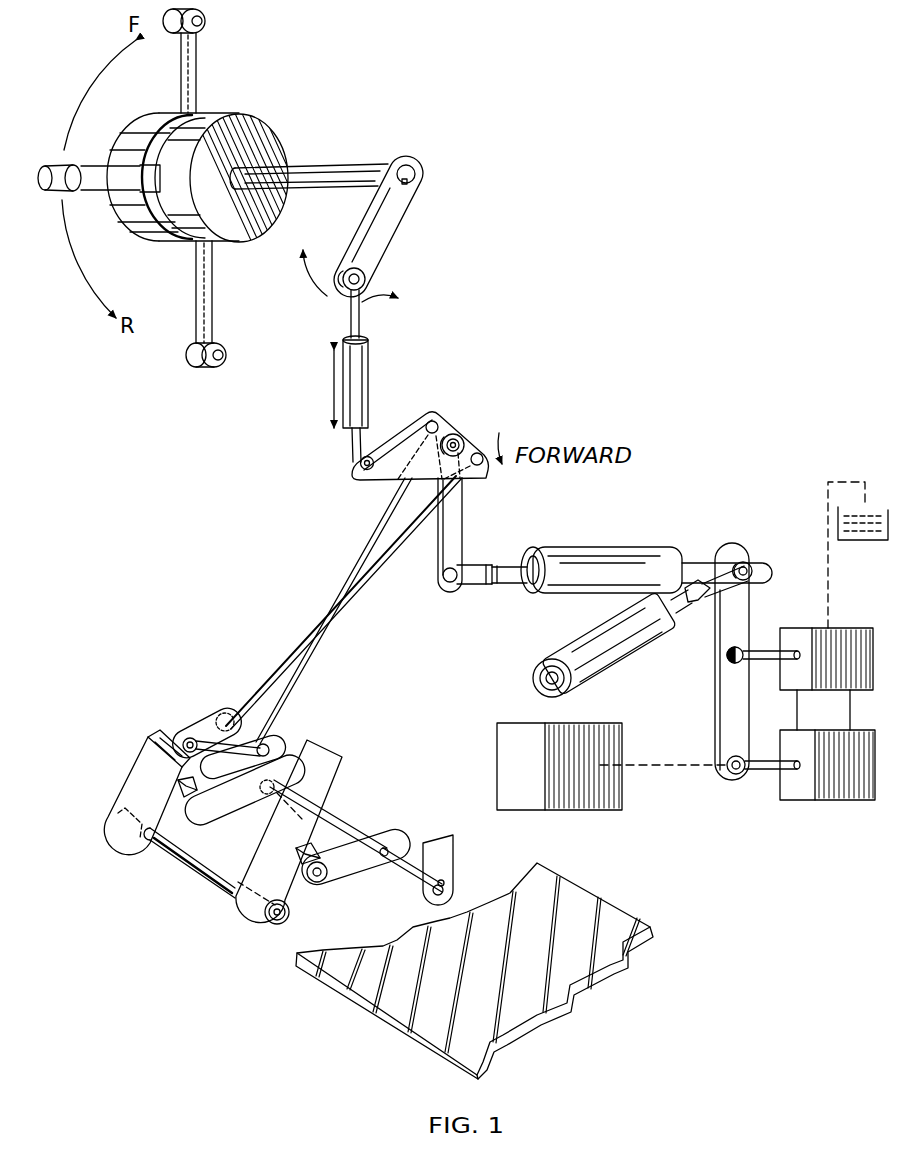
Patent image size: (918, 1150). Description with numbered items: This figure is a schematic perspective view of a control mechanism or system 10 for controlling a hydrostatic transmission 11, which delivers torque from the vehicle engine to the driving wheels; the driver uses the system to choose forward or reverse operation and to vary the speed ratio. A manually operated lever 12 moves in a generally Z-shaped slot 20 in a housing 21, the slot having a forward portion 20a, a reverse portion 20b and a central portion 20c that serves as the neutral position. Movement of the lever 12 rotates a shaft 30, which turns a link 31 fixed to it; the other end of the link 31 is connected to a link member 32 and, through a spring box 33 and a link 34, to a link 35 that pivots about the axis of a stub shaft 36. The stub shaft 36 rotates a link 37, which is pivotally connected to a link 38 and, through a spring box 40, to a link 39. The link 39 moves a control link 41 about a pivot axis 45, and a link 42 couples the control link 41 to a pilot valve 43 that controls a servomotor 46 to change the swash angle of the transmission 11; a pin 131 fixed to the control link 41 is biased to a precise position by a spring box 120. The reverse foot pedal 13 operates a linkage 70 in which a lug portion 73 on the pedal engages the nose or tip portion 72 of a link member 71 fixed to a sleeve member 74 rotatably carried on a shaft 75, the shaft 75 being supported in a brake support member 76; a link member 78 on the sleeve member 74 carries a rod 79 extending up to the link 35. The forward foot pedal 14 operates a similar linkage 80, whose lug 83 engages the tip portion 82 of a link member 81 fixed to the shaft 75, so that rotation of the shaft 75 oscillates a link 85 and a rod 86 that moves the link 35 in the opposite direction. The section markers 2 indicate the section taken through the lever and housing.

The control mechanism or system 10 is at (552, 108).
The hydrostatic transmission 11 is at (606, 726).
The lever 12 is at (205, 22).
The reverse foot pedal 13 is at (140, 780).
The forward foot pedal 14 is at (330, 757).
The slot 20 is at (200, 170).
The forward portion of slot 20a is at (178, 118).
The reverse portion of slot 20b is at (166, 218).
The central portion of slot 20c is at (152, 182).
The housing 21 is at (258, 123).
The shaft 30 is at (312, 168).
The link 31 is at (382, 226).
The link member 32 is at (362, 312).
The spring box 33 is at (372, 380).
The link 34 is at (354, 447).
The link 35 is at (432, 439).
The stub shaft 36 is at (460, 440).
The link 37 is at (455, 505).
The link 38 is at (506, 552).
The link 39 is at (756, 560).
The spring box 40 is at (613, 551).
The control link 41 is at (766, 665).
The link 42 is at (766, 652).
The pilot valve 43 is at (845, 628).
The pivot axis 45 is at (730, 779).
The servomotor 46 is at (818, 800).
The linkage 70 is at (295, 791).
The link member 71 is at (244, 781).
The nose or tip portion 72 is at (195, 824).
The lug portion 73 is at (190, 796).
The sleeve member 74 is at (277, 759).
The shaft 75 is at (332, 812).
The brake support member 76 is at (447, 858).
The link member 78 is at (265, 744).
The rod 79 is at (338, 575).
The linkage 80 is at (316, 610).
The link member 81 is at (388, 850).
The tip portion 82 is at (312, 884).
The lug 83 is at (300, 866).
The link 85 is at (218, 718).
The rod 86 is at (346, 592).
The spring box 120 is at (596, 630).
The pin 131 is at (758, 570).
The section line 2 is at (123, 96).